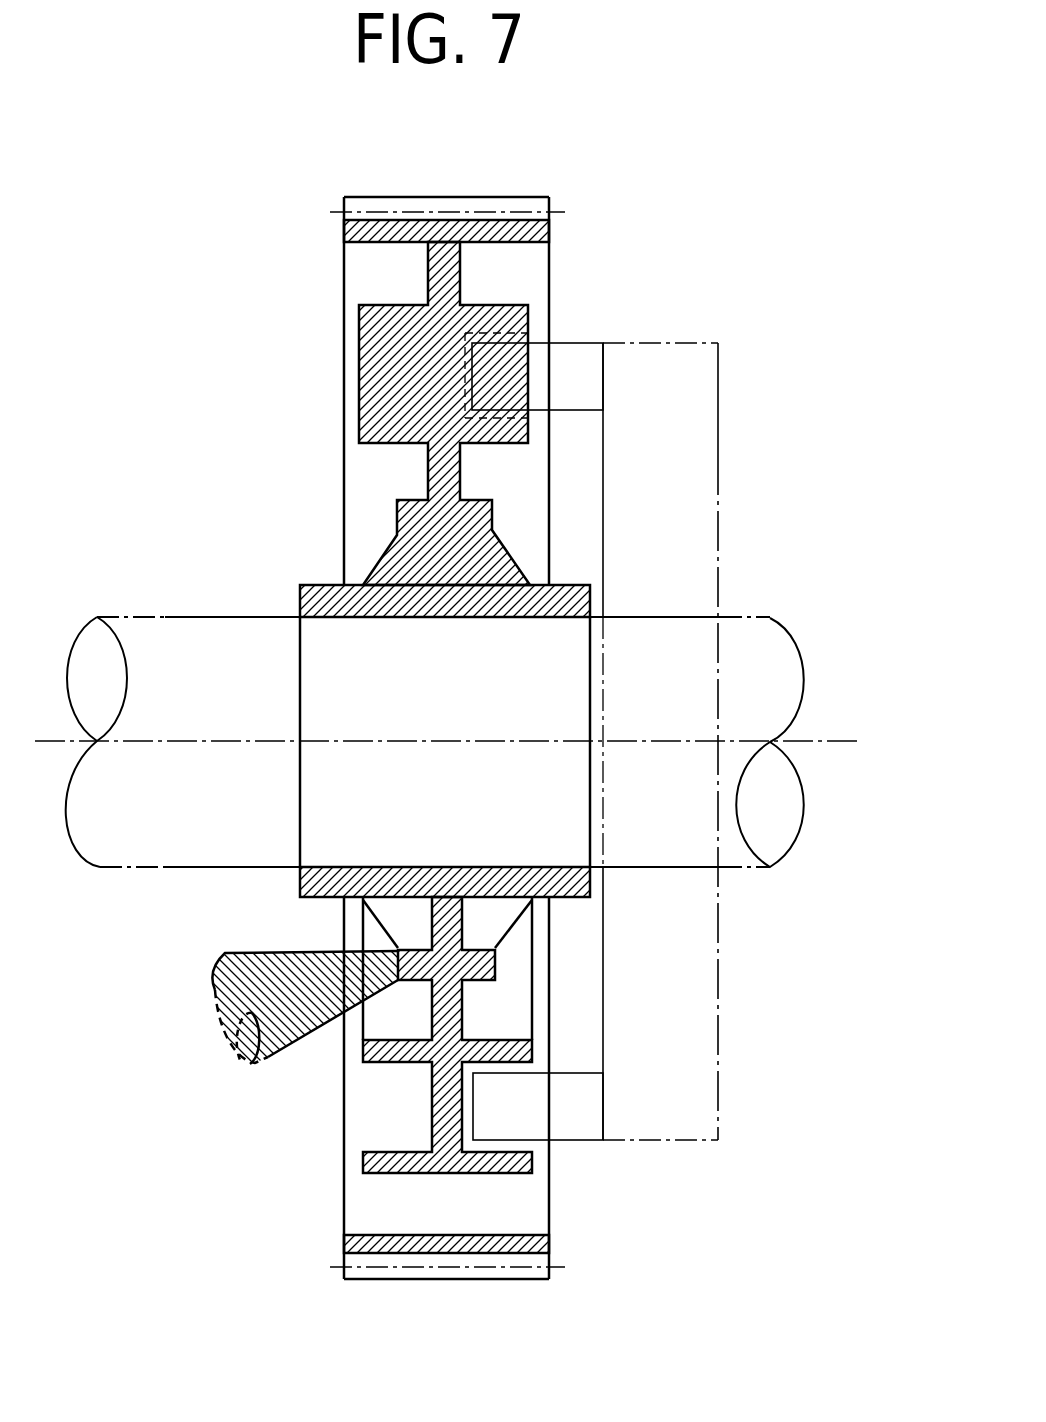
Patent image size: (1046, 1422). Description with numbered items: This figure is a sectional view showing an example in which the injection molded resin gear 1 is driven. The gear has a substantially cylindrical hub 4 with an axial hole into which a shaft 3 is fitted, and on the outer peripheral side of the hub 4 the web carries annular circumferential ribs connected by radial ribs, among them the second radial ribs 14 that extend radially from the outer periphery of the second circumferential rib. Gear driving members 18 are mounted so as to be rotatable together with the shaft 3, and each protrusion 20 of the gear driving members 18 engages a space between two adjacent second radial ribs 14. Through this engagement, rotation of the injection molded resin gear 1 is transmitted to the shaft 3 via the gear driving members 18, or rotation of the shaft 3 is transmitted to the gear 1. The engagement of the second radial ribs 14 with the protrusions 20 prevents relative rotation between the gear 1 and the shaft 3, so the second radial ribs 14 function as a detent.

The injection molded resin gear 1 is at (568, 245).
The shaft 3 is at (175, 620).
The hub 4 is at (322, 586).
The second radial ribs 14 is at (530, 396).
The gear driving members 18 is at (720, 478).
The protrusions 20 is at (580, 354).